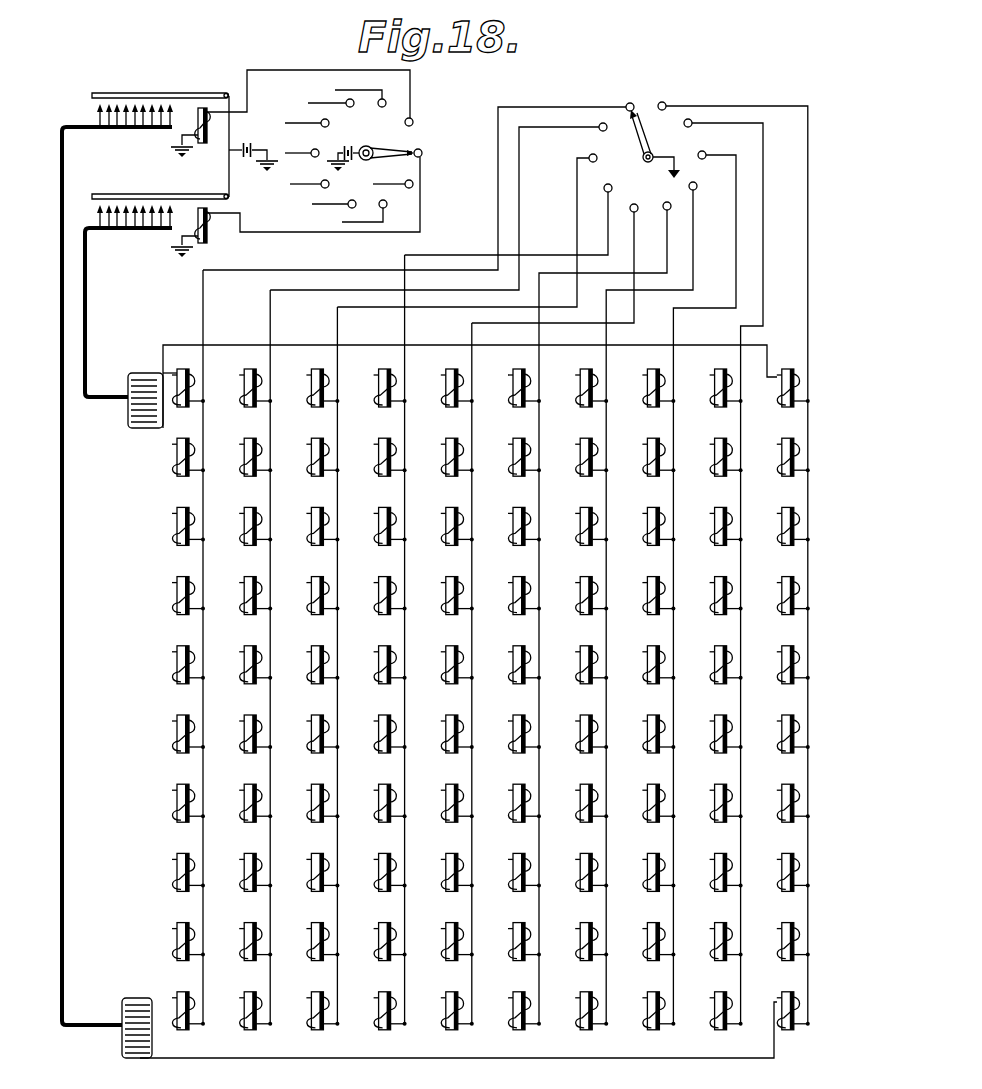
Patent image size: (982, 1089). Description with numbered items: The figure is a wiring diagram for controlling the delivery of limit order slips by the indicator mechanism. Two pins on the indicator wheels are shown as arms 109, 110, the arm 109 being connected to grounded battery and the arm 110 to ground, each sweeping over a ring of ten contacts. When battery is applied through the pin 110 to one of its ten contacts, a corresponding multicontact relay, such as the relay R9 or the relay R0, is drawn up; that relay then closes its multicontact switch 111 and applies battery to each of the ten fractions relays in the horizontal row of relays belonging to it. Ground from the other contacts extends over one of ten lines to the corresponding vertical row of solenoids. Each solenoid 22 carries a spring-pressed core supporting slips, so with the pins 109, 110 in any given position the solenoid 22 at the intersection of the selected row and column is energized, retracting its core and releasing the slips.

The multicontact switch 111 is at (132, 94).
The multicontact relay R9 is at (290, 120).
The multicontact relay R0 is at (295, 213).
The pin 109 is at (399, 181).
The pin 110 is at (643, 136).
The solenoid 22 is at (382, 576).